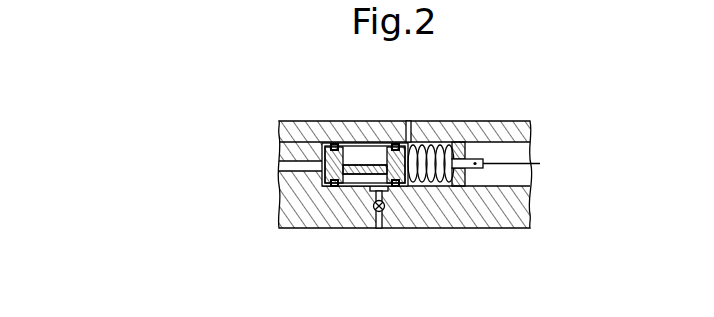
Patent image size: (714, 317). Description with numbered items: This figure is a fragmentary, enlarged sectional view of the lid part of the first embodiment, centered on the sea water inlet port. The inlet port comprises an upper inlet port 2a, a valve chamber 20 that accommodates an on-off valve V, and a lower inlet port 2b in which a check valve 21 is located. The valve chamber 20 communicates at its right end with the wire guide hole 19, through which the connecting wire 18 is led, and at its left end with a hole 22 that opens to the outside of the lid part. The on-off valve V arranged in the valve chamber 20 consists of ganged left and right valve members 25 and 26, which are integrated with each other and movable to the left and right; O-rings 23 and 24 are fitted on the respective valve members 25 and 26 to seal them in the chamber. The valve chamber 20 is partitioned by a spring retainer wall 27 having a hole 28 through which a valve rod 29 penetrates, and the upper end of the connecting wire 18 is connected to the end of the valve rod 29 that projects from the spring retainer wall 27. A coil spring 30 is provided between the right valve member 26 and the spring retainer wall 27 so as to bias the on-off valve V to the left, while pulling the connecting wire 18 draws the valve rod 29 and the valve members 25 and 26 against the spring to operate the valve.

The connecting wire 18 is at (510, 166).
The wire guide hole 19 is at (530, 121).
The valve chamber 20 is at (355, 146).
The check valve 21 is at (375, 212).
The hole 22 is at (288, 164).
The O-ring 23 is at (327, 141).
The O-ring 24 is at (394, 142).
The left valve member 25 is at (332, 184).
The right valve member 26 is at (385, 173).
The spring retainer wall 27 is at (456, 142).
The hole 28 is at (470, 174).
The valve rod 29 is at (472, 156).
The coil spring 30 is at (452, 188).
The upper inlet port 2a is at (409, 128).
The lower inlet port 2b is at (383, 229).
The on-off valve V is at (371, 144).